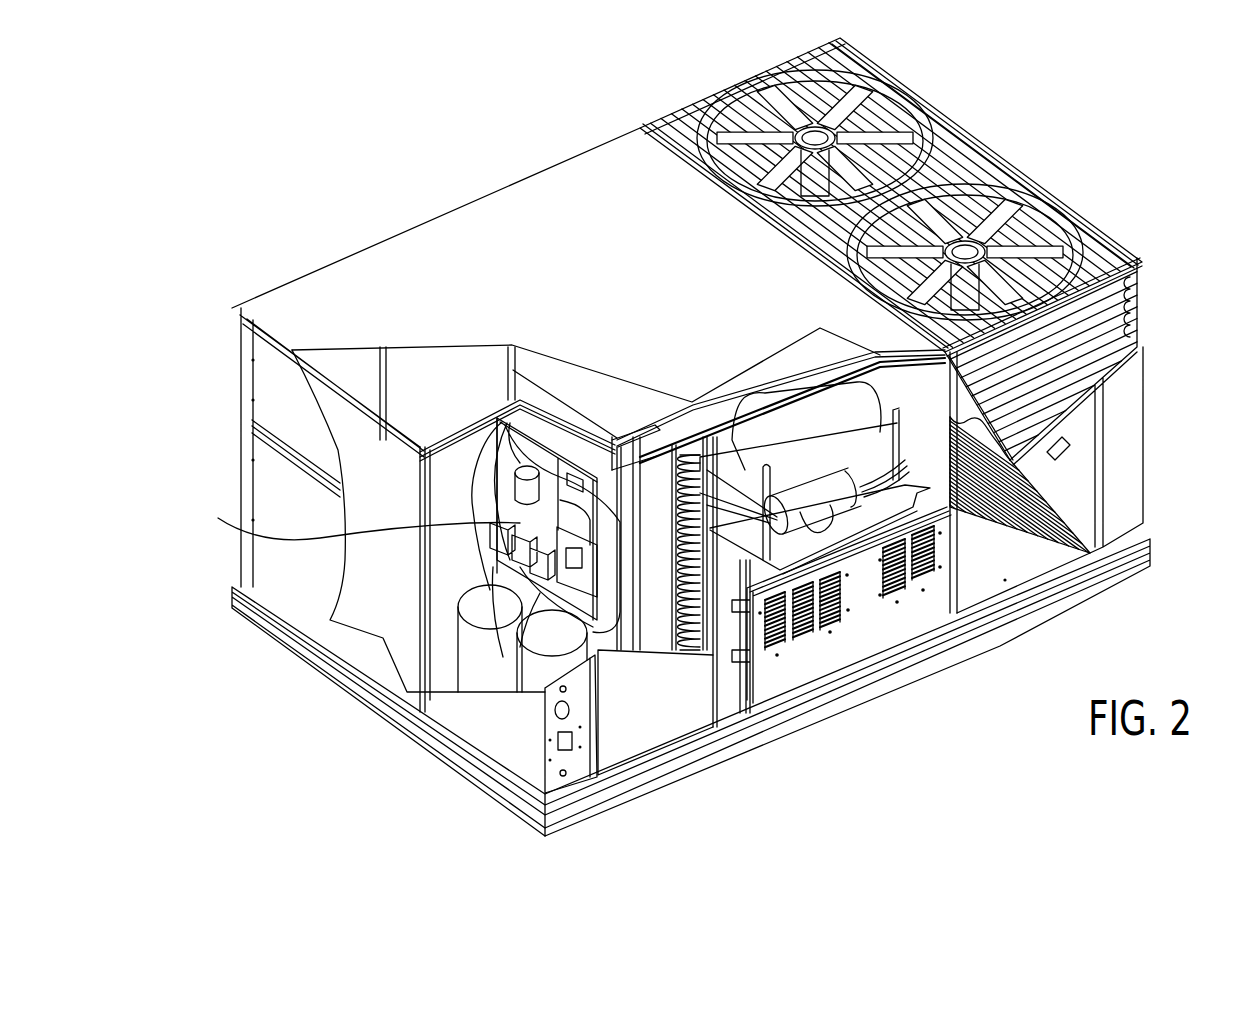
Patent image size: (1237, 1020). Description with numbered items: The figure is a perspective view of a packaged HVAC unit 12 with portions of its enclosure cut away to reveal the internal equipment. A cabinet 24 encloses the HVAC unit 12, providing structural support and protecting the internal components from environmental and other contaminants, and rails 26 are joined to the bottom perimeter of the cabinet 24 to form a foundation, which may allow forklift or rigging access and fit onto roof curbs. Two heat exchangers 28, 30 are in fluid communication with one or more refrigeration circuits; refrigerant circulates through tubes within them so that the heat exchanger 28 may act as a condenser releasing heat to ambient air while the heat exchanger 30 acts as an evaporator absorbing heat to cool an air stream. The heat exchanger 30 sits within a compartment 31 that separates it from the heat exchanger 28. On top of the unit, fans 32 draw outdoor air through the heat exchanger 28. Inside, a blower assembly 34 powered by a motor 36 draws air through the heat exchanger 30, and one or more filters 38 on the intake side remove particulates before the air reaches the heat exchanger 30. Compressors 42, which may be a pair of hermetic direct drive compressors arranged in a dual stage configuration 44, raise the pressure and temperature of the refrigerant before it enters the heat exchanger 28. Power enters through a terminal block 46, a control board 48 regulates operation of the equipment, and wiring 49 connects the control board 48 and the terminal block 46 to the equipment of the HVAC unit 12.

The HVAC unit 12 is at (420, 136).
The cabinet 24 is at (280, 556).
The rails 26 is at (302, 650).
The heat exchanger 28 is at (1142, 311).
The heat exchanger 30 is at (690, 633).
The compartment 31 is at (704, 466).
The fans 32 is at (980, 217).
The blower assembly 34 is at (883, 447).
The motor 36 is at (817, 493).
The filters 38 is at (652, 478).
The compressors 42 is at (462, 637).
The dual stage configuration 44 is at (456, 592).
The terminal block 46 is at (350, 521).
The control board 48 is at (582, 532).
The wiring 49 is at (648, 470).